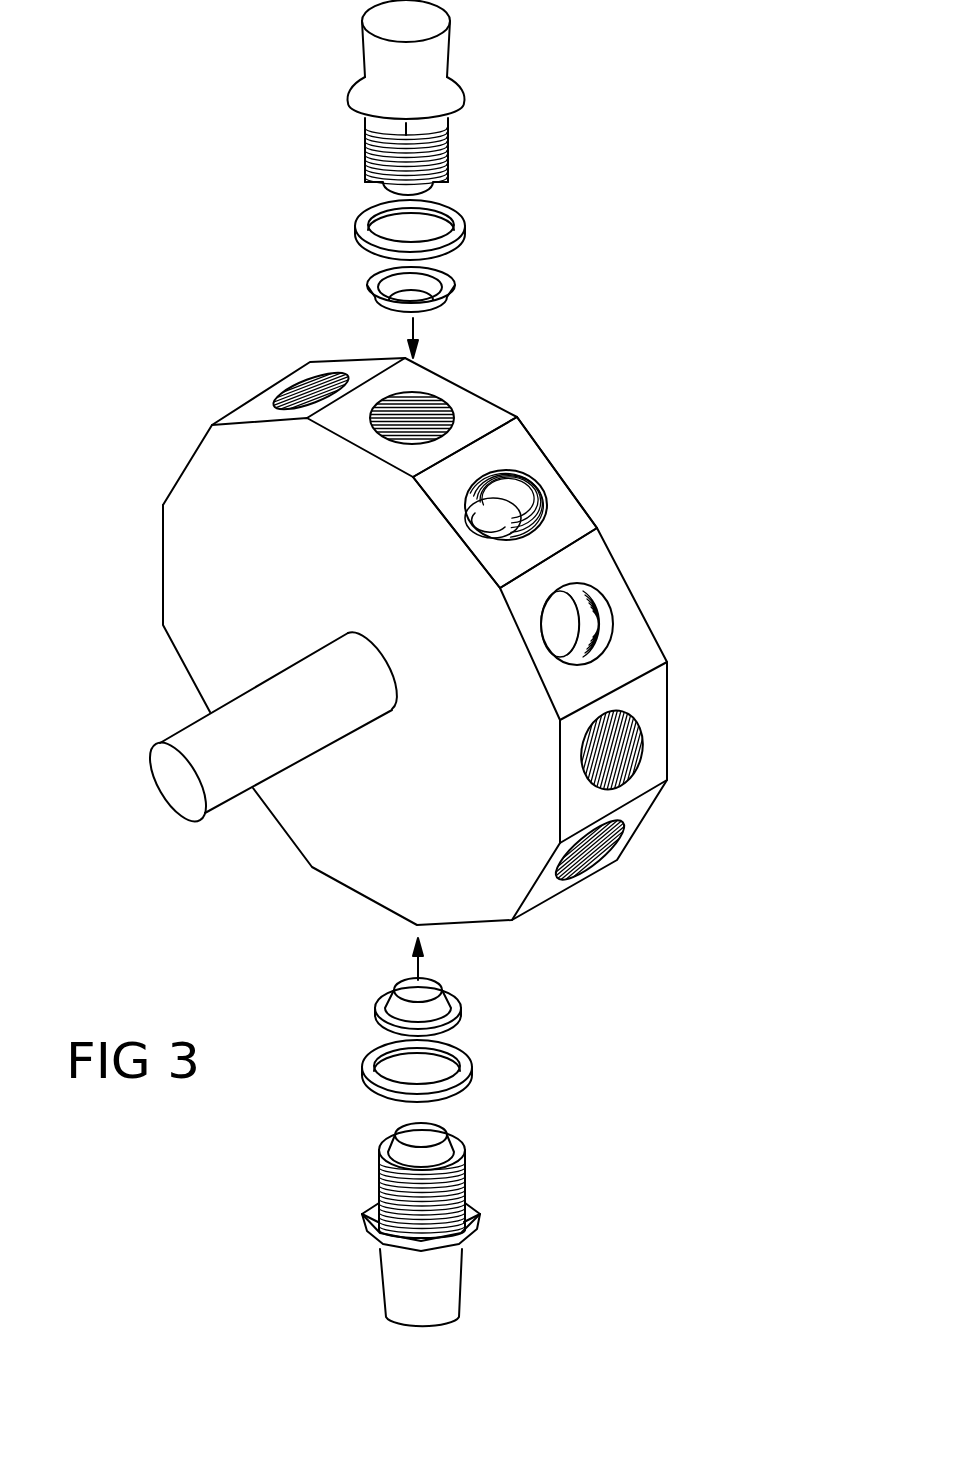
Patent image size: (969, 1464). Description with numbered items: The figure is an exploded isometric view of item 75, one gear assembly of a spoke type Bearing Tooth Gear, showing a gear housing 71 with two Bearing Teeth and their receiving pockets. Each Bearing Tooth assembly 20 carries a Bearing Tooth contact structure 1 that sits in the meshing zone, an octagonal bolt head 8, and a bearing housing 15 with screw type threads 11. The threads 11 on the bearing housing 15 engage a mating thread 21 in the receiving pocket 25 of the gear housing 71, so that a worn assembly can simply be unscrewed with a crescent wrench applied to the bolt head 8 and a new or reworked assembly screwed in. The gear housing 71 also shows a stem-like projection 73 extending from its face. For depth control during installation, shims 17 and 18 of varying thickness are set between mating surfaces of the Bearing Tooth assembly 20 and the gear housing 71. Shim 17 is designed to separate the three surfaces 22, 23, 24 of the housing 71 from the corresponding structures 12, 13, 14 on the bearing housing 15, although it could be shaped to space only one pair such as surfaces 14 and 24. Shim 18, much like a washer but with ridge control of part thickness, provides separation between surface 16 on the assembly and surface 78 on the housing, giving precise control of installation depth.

The Bearing Tooth contact structure 1 is at (450, 32).
The octagonal bolt head 8 is at (458, 112).
The screw type threads 11 is at (448, 140).
The bearing housing structure 12 is at (437, 185).
The bearing housing structure 13 is at (462, 1145).
The bearing housing structure 14 is at (428, 1130).
The bearing housing 15 is at (365, 166).
The shimable surface 16 is at (477, 1218).
The shim 17 is at (455, 285).
The shim 18 is at (355, 226).
The Bearing Tooth assembly 20 is at (415, 73).
The mating thread 21 is at (442, 400).
The housing surface 22 is at (468, 508).
The housing surface 23 is at (487, 542).
The housing surface 24 is at (478, 520).
The receiving pocket 25 is at (290, 385).
The gear housing 71 is at (468, 897).
The stem 73 is at (237, 797).
The gear assembly 75 is at (93, 678).
The shimable surface 78 is at (572, 523).